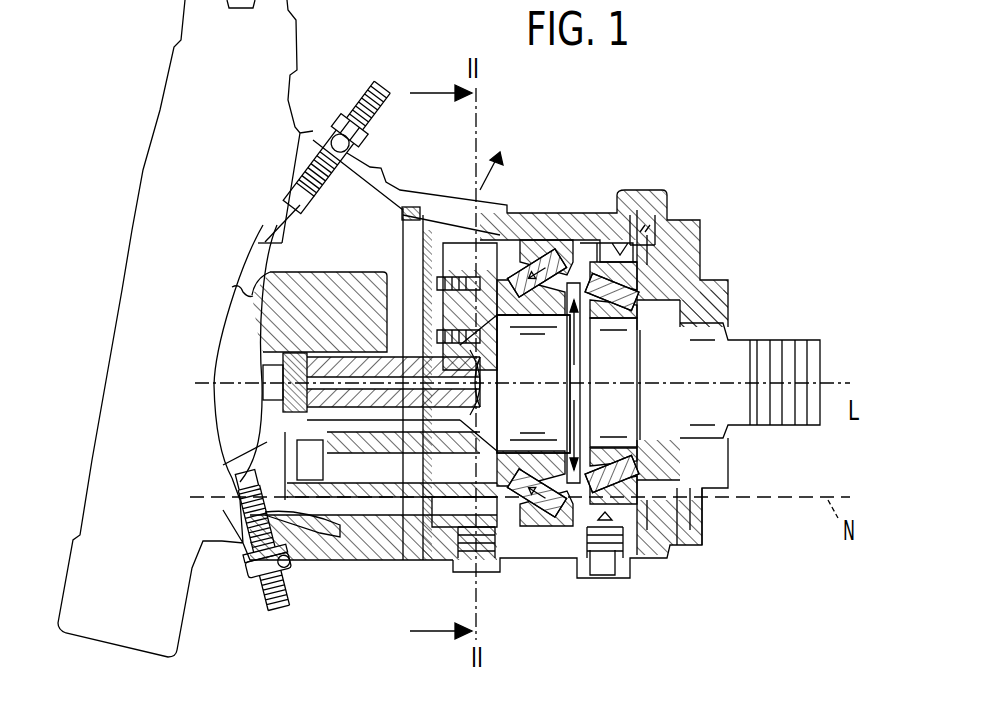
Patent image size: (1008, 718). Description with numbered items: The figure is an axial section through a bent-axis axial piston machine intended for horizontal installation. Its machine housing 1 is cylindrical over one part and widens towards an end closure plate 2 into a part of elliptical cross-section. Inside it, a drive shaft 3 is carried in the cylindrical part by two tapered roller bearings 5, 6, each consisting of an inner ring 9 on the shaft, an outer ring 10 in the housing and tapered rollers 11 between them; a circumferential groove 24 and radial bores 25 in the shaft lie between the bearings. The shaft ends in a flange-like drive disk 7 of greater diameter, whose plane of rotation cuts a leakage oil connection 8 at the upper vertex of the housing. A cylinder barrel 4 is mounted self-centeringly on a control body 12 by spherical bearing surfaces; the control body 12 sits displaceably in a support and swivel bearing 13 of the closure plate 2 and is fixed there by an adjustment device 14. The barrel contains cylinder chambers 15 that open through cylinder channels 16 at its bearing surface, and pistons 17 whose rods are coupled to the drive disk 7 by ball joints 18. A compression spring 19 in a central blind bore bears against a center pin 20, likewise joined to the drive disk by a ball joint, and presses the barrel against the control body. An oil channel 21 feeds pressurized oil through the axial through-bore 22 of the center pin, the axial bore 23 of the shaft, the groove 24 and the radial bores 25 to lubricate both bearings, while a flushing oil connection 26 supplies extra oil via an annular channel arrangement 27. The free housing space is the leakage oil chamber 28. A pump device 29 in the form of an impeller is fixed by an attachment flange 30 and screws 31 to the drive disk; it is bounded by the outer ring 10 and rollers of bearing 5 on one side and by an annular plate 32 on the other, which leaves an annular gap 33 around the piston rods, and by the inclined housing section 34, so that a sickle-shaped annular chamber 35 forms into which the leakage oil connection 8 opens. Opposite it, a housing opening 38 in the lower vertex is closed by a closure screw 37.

The machine housing 1 is at (312, 540).
The end closure plate 2 is at (148, 632).
The drive shaft 3 is at (718, 424).
The cylinder barrel 4 is at (316, 270).
The tapered roller bearing 5 is at (554, 215).
The tapered roller bearing 6 is at (589, 215).
The drive disk 7 is at (525, 385).
The leakage oil connection 8 is at (497, 162).
The inner ring 9 is at (547, 470).
The outer ring 10 is at (575, 580).
The tapered rollers 11 is at (644, 312).
The control body 12 is at (218, 431).
The support and swivel bearing 13 is at (246, 250).
The adjustment device 14 is at (345, 90).
The cylinder chambers 15 is at (391, 466).
The cylinder channels 16 is at (223, 465).
The pistons 17 is at (322, 523).
The ball joints 18 is at (490, 405).
The compression spring 19 is at (282, 398).
The center pin 20 is at (324, 355).
The oil channel 21 is at (262, 372).
The axial through-bore 22 is at (357, 360).
The axial bore 23 is at (533, 384).
The circumferential groove 24 is at (587, 392).
The radial bores 25 is at (592, 315).
The flushing oil connection 26 is at (607, 580).
The annular channel arrangement 27 is at (686, 540).
The leakage oil chamber 28 is at (290, 215).
The pump device 29 is at (487, 565).
The attachment flange 30 is at (437, 300).
The screws 31 is at (403, 262).
The annular plate 32 is at (412, 200).
The annular gap 33 is at (406, 548).
The section of the machine housing 34 is at (512, 215).
The annular chamber 35 is at (454, 215).
The closure screw 37 is at (464, 565).
The housing opening 38 is at (452, 550).